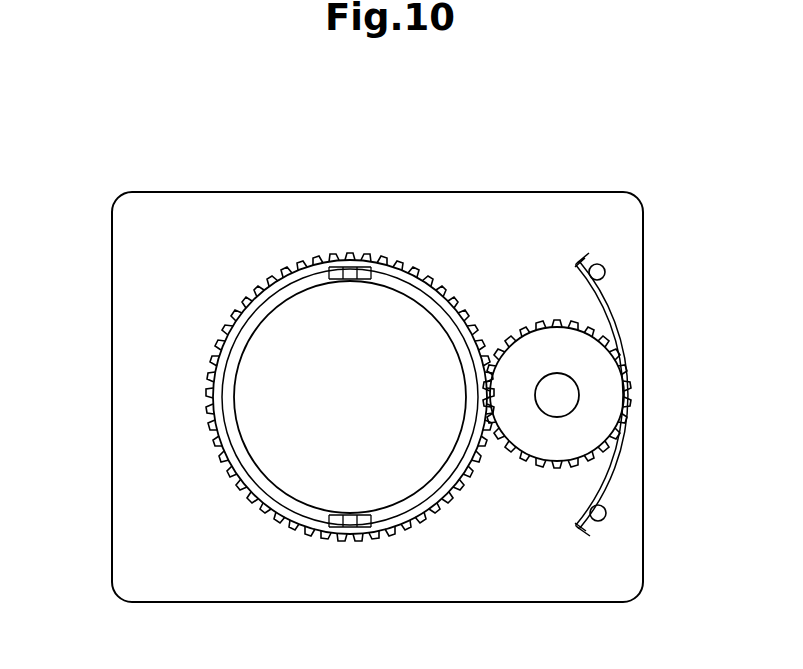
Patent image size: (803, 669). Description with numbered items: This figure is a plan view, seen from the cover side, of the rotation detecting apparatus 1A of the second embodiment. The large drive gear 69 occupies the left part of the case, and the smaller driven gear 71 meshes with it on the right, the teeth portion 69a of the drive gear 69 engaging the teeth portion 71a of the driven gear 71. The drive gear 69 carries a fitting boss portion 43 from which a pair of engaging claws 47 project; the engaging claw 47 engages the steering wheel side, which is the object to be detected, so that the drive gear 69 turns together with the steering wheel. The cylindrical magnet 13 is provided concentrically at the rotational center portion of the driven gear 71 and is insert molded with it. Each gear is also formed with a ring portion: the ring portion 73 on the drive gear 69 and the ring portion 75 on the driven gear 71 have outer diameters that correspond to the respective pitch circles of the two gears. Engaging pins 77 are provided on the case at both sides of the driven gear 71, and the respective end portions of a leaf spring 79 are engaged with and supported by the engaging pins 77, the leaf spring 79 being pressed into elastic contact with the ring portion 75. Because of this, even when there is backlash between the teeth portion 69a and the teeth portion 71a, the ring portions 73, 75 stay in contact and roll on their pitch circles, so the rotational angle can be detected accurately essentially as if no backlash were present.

The rotation detecting apparatus 1A is at (643, 169).
The magnet 13 is at (583, 399).
The fitting boss portion 43 is at (275, 278).
The engaging claw 47 is at (322, 262).
The drive gear 69 is at (388, 256).
The teeth portion 69a is at (318, 262).
The driven gear 71 is at (571, 319).
The teeth portion 71a is at (528, 323).
The ring portion 73 is at (437, 283).
The ring portion 75 is at (550, 322).
The engaging pin 77 is at (604, 268).
The leaf spring 79 is at (613, 473).